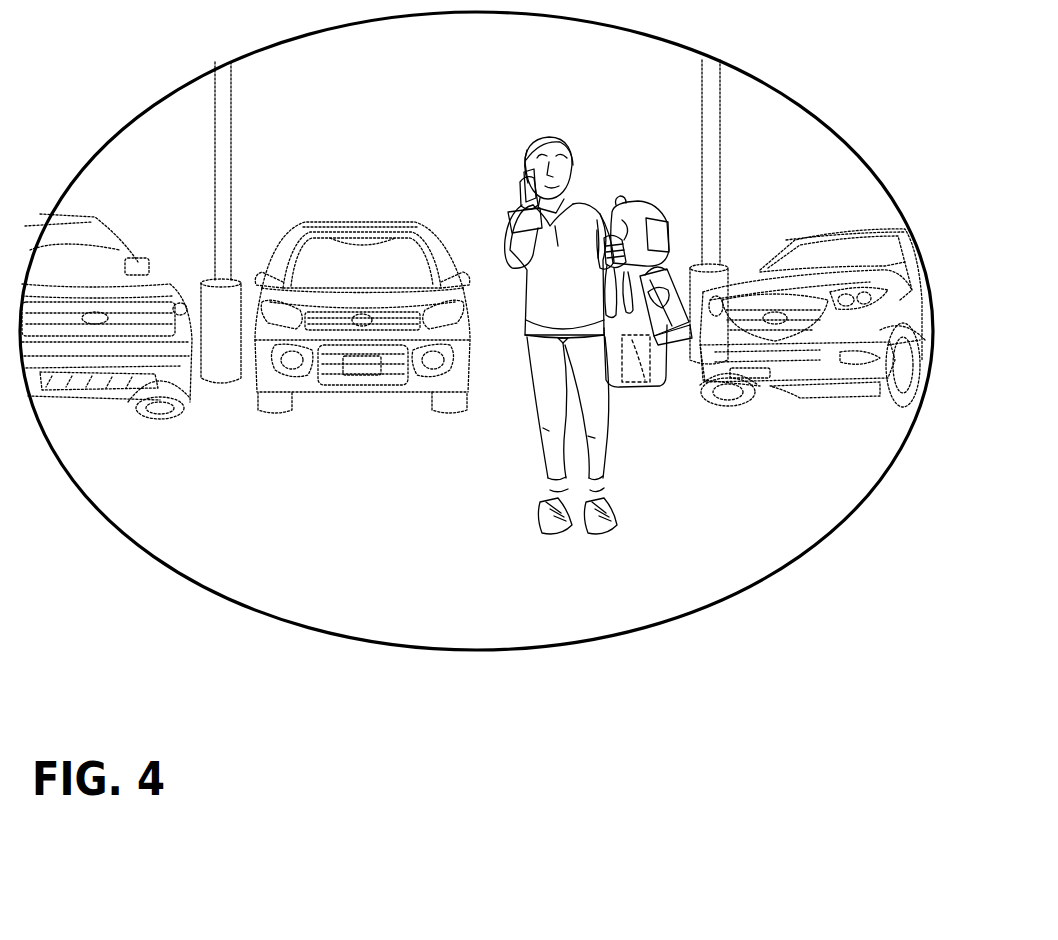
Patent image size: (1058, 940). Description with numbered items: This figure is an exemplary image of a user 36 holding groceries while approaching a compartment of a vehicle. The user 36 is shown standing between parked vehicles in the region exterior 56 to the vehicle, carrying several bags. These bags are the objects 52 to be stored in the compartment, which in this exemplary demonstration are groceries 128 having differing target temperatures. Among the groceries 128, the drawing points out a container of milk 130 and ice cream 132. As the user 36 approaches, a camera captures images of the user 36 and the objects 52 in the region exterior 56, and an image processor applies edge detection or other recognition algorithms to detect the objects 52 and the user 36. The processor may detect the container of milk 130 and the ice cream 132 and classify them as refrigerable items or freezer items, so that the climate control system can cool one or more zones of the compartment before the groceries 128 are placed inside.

The user 36 is at (546, 139).
The object 52 is at (684, 213).
The region exterior 56 is at (343, 464).
The groceries 128 is at (624, 197).
The container of milk 130 is at (643, 210).
The ice cream 132 is at (675, 292).